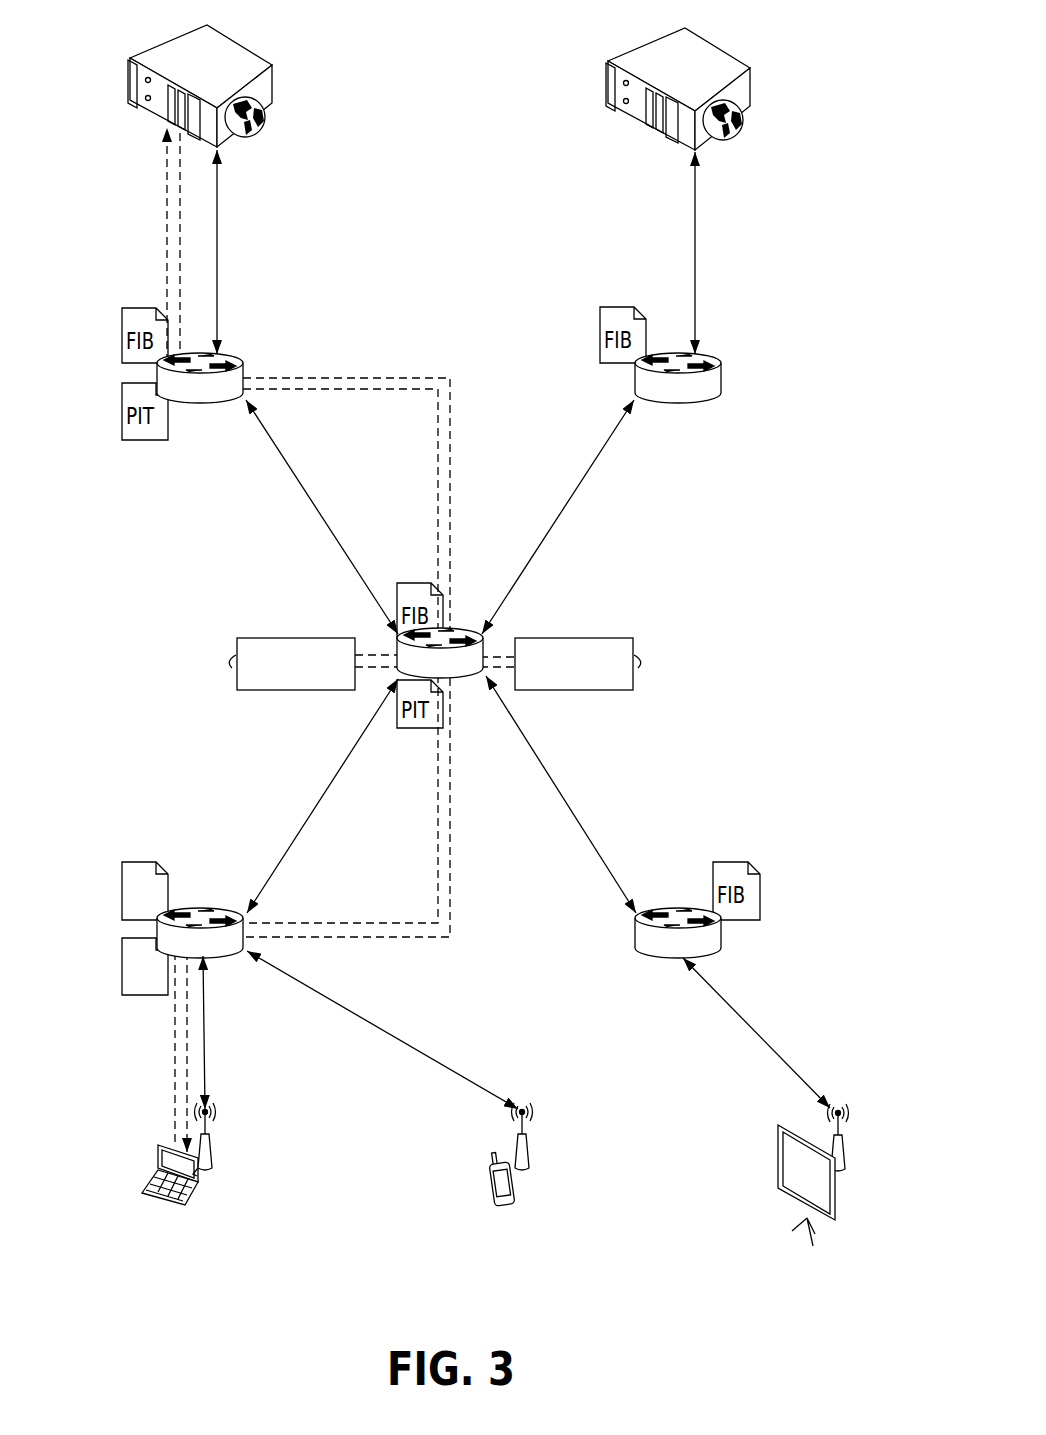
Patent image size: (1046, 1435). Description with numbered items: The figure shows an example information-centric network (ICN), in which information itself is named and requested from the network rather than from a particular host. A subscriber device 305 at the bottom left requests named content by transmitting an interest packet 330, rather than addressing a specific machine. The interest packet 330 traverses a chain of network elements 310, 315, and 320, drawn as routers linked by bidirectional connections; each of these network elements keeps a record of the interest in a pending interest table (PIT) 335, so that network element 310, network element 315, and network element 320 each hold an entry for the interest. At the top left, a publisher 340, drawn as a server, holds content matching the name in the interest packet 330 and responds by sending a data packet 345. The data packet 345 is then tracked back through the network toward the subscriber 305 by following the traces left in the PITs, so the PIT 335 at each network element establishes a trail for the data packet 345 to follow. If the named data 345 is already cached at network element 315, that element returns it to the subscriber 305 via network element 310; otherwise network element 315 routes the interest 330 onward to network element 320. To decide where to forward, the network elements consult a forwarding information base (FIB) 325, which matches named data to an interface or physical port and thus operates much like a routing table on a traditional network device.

The device 305 is at (160, 1143).
The network element 310 is at (216, 957).
The network element 315 is at (460, 677).
The network element 320 is at (244, 361).
The forwarding information base 325 is at (122, 893).
The interest packet 330 is at (297, 638).
The pending interest table 335 is at (122, 968).
The publisher 340 is at (170, 43).
The data packet 345 is at (577, 638).